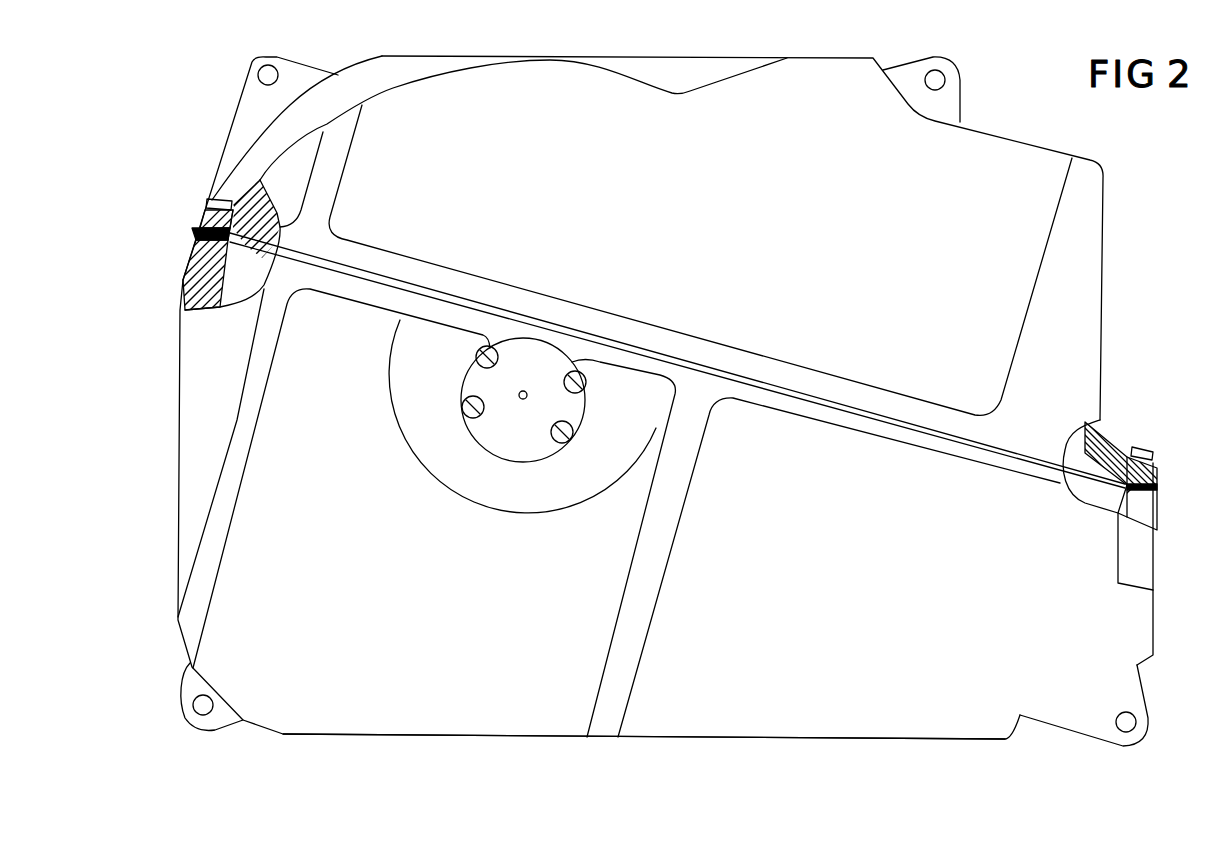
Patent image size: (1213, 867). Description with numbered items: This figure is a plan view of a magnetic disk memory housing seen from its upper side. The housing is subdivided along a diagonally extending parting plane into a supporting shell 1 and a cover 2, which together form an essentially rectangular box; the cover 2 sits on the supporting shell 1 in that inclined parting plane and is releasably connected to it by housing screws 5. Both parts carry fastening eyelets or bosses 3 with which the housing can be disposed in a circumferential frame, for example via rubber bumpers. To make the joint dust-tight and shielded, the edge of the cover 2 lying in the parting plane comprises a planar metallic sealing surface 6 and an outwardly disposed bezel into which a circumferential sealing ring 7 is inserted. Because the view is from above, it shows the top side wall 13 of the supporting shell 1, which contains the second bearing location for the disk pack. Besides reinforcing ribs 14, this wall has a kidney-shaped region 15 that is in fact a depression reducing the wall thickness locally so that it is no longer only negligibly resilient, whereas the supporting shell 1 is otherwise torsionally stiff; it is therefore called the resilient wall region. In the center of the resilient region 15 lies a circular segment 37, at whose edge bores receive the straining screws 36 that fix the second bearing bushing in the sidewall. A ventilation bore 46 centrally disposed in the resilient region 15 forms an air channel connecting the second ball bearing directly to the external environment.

The supporting shell 1 is at (180, 466).
The cover 2 is at (232, 128).
The fastening eyelets or bosses 3 is at (258, 80).
The housing screws 5 is at (212, 198).
The planar metallic sealing surface 6 is at (240, 228).
The circumferential sealing ring 7 is at (196, 230).
The top side wall 13 is at (434, 716).
The reinforcing ribs 14 is at (215, 552).
The kidney-shaped region (resilient wall region) 15 is at (477, 500).
The straining screws 36 is at (585, 390).
The circular segment 37 is at (533, 440).
The ventilation bore 46 is at (524, 390).